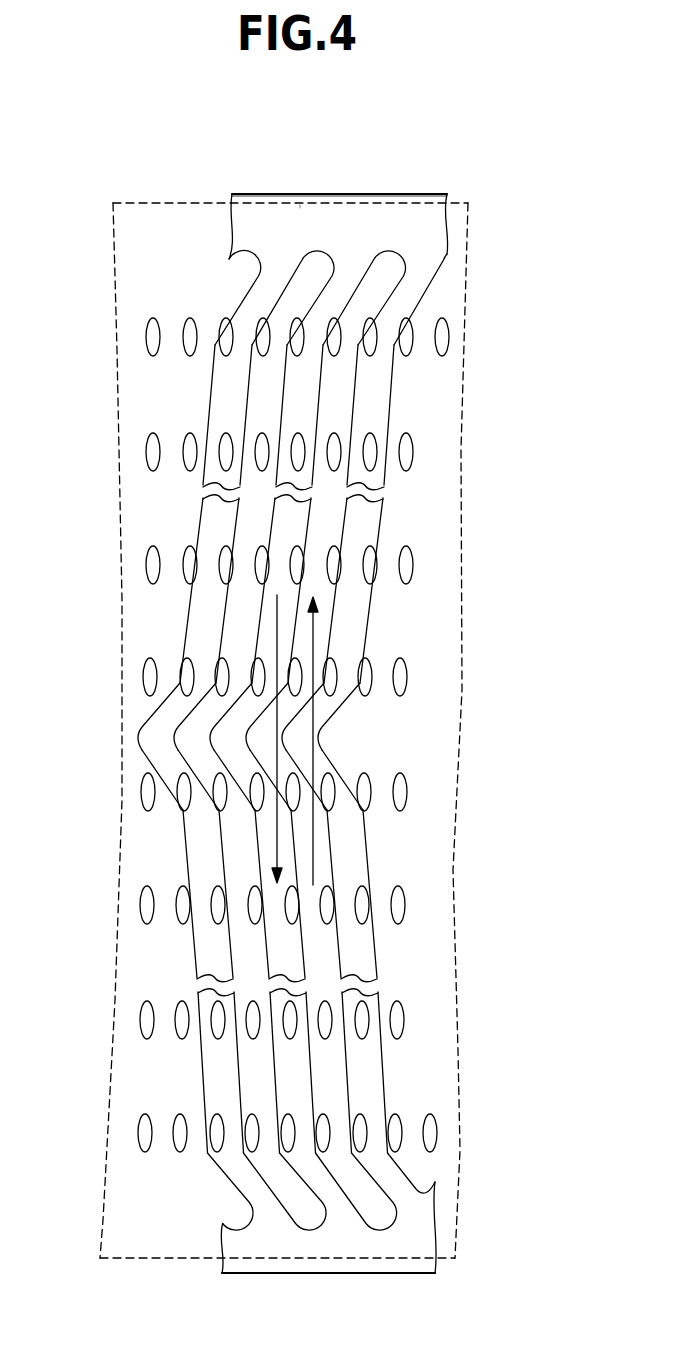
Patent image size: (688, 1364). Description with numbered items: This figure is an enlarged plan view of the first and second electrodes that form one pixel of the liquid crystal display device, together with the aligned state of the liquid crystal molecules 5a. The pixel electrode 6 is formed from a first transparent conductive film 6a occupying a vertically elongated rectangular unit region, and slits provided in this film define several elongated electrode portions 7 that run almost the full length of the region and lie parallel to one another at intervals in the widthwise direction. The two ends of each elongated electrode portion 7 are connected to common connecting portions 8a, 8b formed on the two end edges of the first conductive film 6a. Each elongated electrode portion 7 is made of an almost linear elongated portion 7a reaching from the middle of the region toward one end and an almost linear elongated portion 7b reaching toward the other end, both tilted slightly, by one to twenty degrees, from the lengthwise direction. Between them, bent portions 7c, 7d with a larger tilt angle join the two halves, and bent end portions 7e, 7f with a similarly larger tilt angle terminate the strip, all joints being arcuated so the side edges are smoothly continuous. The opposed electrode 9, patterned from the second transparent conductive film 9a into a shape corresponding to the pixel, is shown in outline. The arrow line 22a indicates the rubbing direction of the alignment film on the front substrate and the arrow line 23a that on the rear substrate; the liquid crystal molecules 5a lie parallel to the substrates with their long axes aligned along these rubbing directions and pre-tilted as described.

The liquid crystal molecules 5a is at (410, 455).
The pixel electrode 6 is at (433, 182).
The first transparent conductive film 6a is at (252, 192).
The elongated electrode portion 7 is at (286, 738).
The elongated portion 7a is at (220, 402).
The elongated portion 7b is at (217, 1093).
The bent portion 7c is at (153, 725).
The bent portion 7d is at (153, 750).
The bent end portion 7e is at (251, 292).
The bent end portion 7f is at (397, 1185).
The common connecting portion 8a is at (300, 220).
The common connecting portion 8b is at (283, 1242).
The opposed electrode 9 is at (135, 190).
The second transparent conductive film 9a is at (127, 299).
The arrow line 22a is at (313, 835).
The arrow line 23a is at (273, 843).